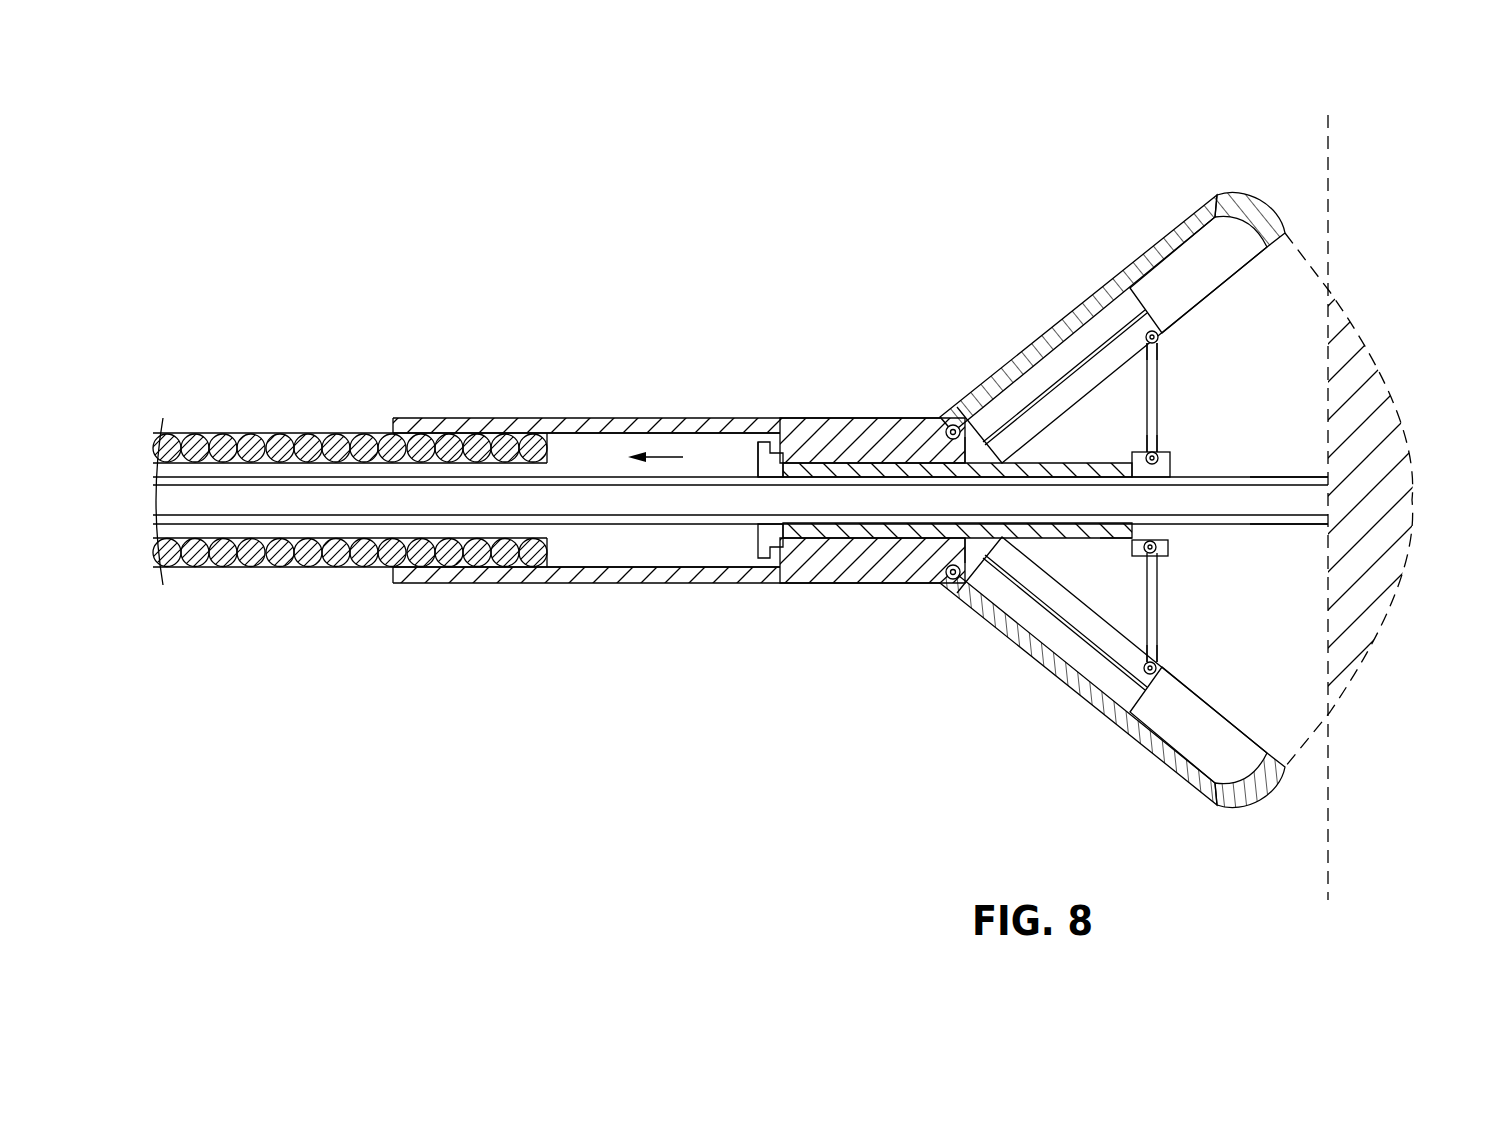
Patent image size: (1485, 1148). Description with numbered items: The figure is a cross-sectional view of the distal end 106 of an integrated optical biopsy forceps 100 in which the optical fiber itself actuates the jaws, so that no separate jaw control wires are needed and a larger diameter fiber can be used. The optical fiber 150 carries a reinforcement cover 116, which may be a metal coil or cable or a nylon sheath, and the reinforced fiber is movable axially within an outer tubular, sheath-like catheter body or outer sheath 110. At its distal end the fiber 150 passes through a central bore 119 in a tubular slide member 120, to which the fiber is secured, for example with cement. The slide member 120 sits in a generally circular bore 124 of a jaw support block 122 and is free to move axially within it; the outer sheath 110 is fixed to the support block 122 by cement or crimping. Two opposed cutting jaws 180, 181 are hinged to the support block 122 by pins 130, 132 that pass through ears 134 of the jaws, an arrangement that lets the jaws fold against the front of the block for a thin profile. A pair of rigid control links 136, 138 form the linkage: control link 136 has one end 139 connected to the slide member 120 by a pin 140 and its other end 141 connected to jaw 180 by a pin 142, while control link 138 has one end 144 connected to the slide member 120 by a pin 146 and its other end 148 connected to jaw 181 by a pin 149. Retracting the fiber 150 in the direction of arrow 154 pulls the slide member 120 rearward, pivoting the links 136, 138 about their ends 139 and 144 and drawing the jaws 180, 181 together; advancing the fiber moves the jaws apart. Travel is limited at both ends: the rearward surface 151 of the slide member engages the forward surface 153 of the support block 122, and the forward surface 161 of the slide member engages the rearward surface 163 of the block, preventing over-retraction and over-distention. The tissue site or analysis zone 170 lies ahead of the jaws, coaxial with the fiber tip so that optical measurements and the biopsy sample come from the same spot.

The forceps 100 is at (831, 276).
The distal end 106 is at (698, 682).
The outer sheath 110 is at (282, 433).
The reinforcement cover 116 is at (1300, 527).
The central bore 119 is at (1172, 472).
The tubular slide member 120 is at (1045, 537).
The jaw support block 122 is at (787, 418).
The bore 124 is at (610, 555).
The pin 130 is at (947, 428).
The pin 132 is at (946, 580).
The ears 134 is at (952, 583).
The control link 136 is at (1158, 390).
The control link 138 is at (1158, 612).
The end of control link 139 is at (1158, 440).
The pin 140 is at (1141, 453).
The other end of control link 141 is at (1158, 355).
The pin 142 is at (1160, 339).
The end of control link 144 is at (1158, 566).
The pin 146 is at (1170, 548).
The other end of control link 148 is at (1158, 648).
The pin 149 is at (1158, 668).
The optical fiber 150 is at (1266, 506).
The rearward surface 151 is at (1115, 573).
The forward surface 153 is at (975, 592).
The arrow 154 is at (672, 453).
The forward surface 161 is at (792, 562).
The rearward surface 163 is at (762, 549).
The tissue site 170 is at (1398, 572).
The cutting jaw 180 is at (1214, 195).
The cutting jaw 181 is at (1214, 810).